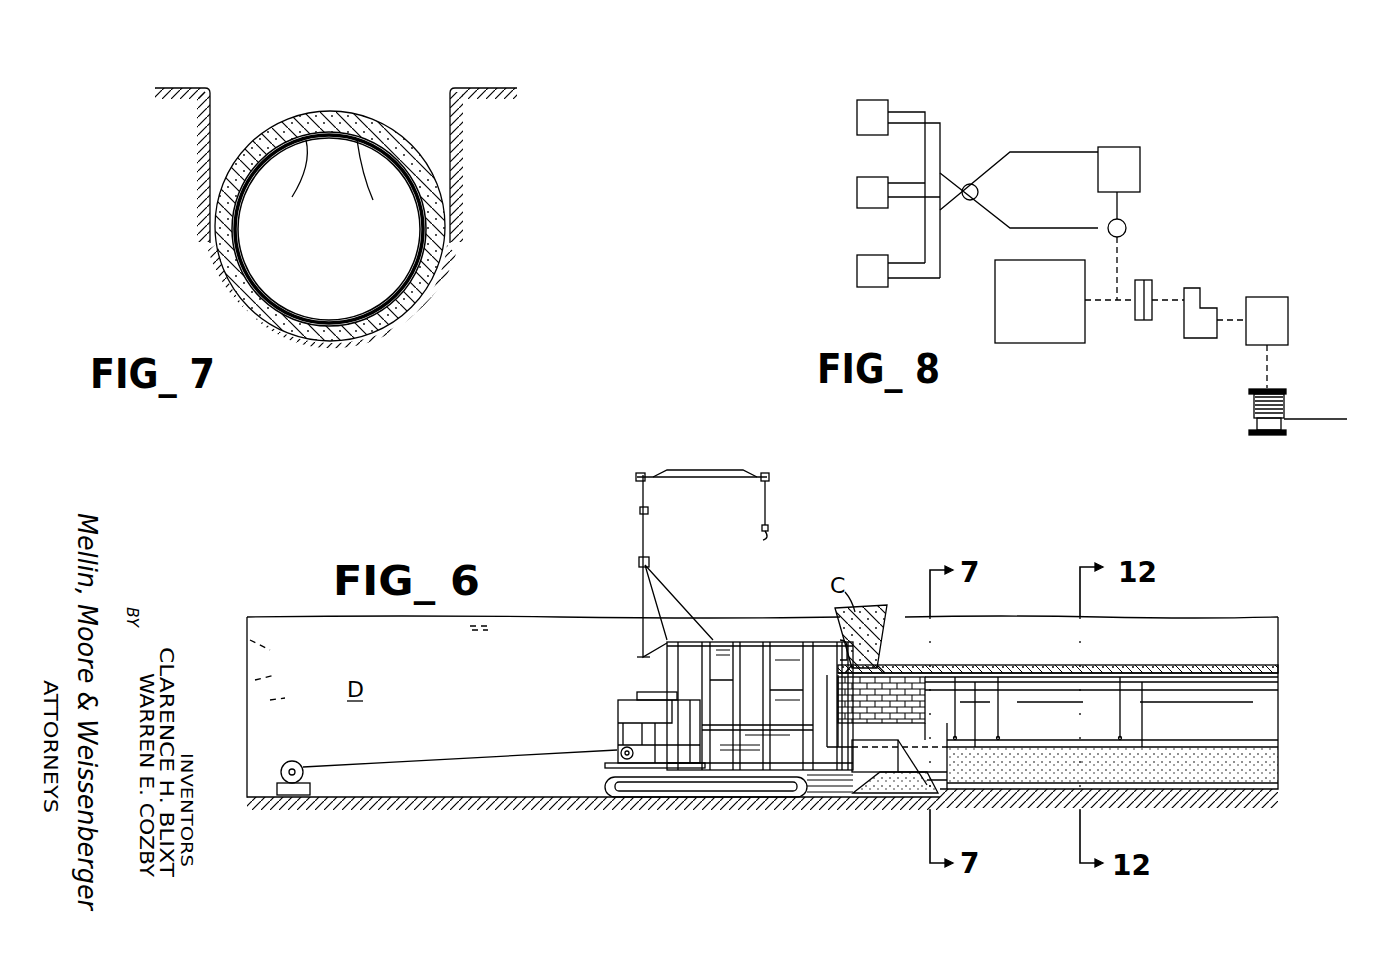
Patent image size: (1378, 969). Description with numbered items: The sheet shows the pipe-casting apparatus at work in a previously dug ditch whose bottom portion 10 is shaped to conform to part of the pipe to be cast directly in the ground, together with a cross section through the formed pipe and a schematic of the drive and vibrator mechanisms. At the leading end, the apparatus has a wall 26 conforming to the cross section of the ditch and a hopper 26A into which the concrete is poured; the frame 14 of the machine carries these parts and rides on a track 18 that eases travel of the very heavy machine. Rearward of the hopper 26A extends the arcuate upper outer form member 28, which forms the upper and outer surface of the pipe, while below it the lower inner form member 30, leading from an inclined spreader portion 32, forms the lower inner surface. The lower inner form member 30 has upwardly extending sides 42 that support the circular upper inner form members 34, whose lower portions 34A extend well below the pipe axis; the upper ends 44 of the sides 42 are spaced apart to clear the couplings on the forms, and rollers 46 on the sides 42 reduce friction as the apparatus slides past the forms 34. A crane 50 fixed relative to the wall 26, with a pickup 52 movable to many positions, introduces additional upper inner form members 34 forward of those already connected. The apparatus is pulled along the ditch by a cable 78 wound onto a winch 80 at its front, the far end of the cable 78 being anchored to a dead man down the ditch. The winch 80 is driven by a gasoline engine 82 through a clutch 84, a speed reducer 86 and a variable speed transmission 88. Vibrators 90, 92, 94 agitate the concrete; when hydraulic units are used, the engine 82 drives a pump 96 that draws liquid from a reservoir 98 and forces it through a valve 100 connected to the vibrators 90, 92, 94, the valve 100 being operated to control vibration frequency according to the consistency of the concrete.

In FIG. 6, the bottom portion 10 is at (410, 797).
In FIG. 6, the machine frame 14 is at (803, 686).
In FIG. 6, the track 18 is at (617, 797).
In FIG. 6, the wall 26 is at (843, 640).
In FIG. 6, the hopper 26A is at (907, 598).
In FIG. 6, the upper outer form member 28 is at (943, 665).
In FIG. 6, the lower inner form member 30 is at (933, 793).
In FIG. 6, the inclined spreader portion 32 is at (913, 787).
In FIG. 6, the upper inner form members 34 is at (947, 728).
In FIG. 7, the lower portions 34A is at (228, 246).
In FIG. 6, the lower portions 34A is at (1018, 747).
In FIG. 7, the upwardly extending sides 42 is at (270, 258).
In FIG. 7, the upper ends 44 is at (333, 183).
In FIG. 6, the rollers 46 is at (878, 663).
In FIG. 6, the crane 50 is at (640, 576).
In FIG. 6, the pickup 52 is at (770, 524).
In FIG. 8, the cable 78 is at (1307, 420).
In FIG. 6, the cable 78 is at (397, 762).
In FIG. 8, the winch 80 is at (1281, 392).
In FIG. 6, the winch 80 is at (620, 748).
In FIG. 8, the gasoline engine 82 is at (995, 305).
In FIG. 6, the gasoline engine 82 is at (633, 703).
In FIG. 8, the clutch 84 is at (1135, 322).
In FIG. 8, the speed reducer 86 is at (1184, 336).
In FIG. 8, the variable speed transmission 88 is at (1288, 303).
In FIG. 8, the vibrator 90 is at (857, 124).
In FIG. 8, the vibrator 92 is at (857, 198).
In FIG. 8, the vibrator 94 is at (857, 277).
In FIG. 8, the pump 96 is at (1124, 235).
In FIG. 8, the reservoir 98 is at (1140, 167).
In FIG. 8, the valve 100 is at (980, 192).